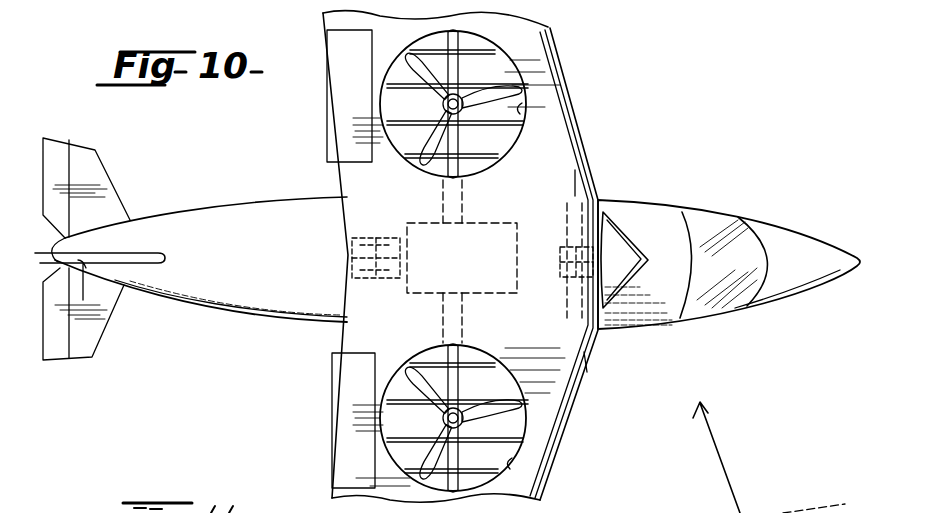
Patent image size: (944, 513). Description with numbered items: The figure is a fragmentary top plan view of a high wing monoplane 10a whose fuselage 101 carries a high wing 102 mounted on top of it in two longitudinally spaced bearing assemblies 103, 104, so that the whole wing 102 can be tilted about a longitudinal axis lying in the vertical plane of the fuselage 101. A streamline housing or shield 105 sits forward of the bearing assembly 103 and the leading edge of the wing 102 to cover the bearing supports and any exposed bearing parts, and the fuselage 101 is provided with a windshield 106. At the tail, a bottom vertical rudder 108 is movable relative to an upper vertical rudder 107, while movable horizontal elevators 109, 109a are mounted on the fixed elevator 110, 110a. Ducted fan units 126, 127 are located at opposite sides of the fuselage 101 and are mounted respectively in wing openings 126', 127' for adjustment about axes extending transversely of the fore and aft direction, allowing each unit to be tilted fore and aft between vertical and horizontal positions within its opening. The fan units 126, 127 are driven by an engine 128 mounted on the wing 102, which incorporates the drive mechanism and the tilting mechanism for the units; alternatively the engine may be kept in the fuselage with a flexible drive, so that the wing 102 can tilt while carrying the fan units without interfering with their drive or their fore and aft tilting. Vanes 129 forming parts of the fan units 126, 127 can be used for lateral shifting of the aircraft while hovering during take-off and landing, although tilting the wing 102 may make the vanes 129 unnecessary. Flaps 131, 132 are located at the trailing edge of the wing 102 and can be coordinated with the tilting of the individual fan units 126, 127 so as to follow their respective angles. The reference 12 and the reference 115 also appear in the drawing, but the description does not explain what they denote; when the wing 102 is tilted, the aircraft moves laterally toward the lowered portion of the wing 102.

The monoplane 10a is at (279, 333).
The wing thickness 12 is at (585, 187).
The fuselage 101 is at (263, 218).
The high wing 102 is at (552, 153).
The bearing assembly 103 is at (600, 330).
The bearing assembly 104 is at (372, 282).
The streamline housing or shield 105 is at (592, 262).
The windshield 106 is at (702, 220).
The upper vertical rudder 107 is at (125, 258).
The bottom vertical rudder 108 is at (83, 300).
The movable horizontal elevator 109 is at (57, 347).
The movable horizontal elevator 109a is at (52, 152).
The fixed elevator 110 is at (93, 327).
The fixed elevator 110a is at (93, 173).
The air inlet vane 115 is at (617, 258).
The fan unit 126 is at (506, 418).
The wing opening 126' is at (567, 470).
The fan unit 127 is at (515, 104).
The wing opening 127' is at (601, 93).
The engine 128 is at (472, 253).
The vanes 129 is at (492, 44).
The flap 131 is at (358, 382).
The flap 132 is at (352, 90).